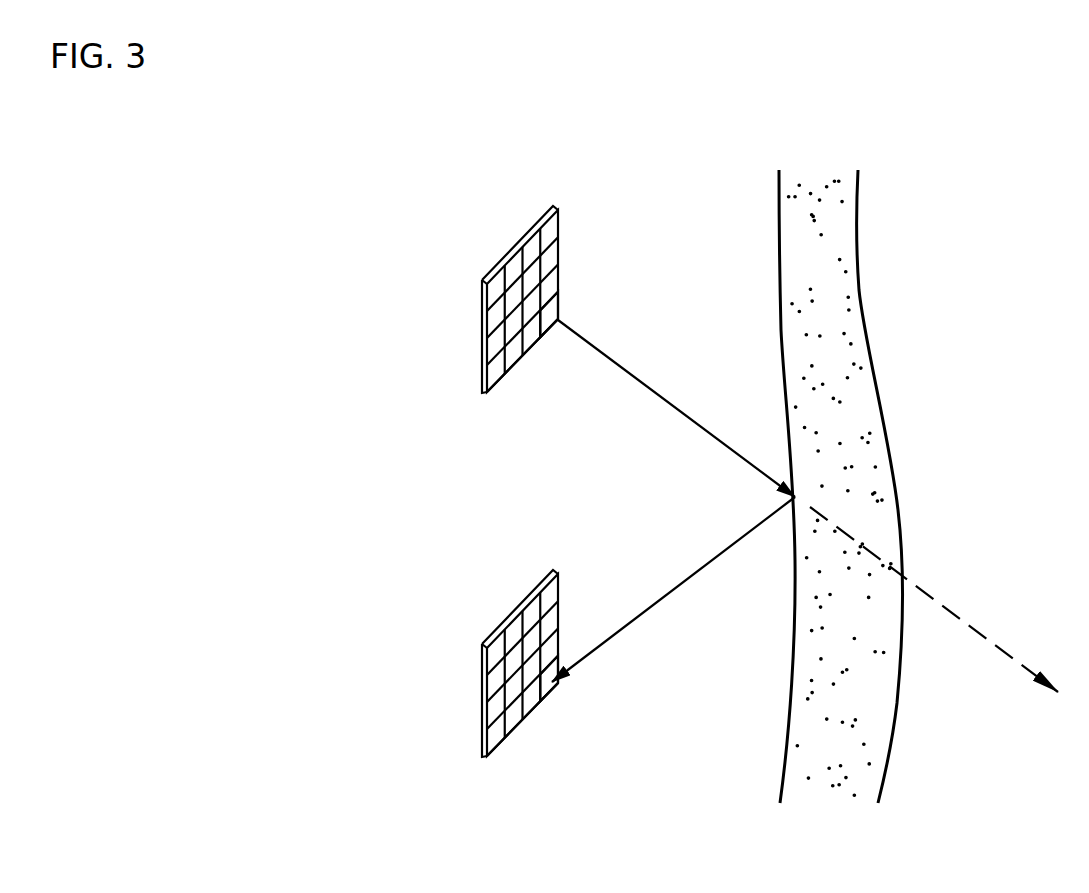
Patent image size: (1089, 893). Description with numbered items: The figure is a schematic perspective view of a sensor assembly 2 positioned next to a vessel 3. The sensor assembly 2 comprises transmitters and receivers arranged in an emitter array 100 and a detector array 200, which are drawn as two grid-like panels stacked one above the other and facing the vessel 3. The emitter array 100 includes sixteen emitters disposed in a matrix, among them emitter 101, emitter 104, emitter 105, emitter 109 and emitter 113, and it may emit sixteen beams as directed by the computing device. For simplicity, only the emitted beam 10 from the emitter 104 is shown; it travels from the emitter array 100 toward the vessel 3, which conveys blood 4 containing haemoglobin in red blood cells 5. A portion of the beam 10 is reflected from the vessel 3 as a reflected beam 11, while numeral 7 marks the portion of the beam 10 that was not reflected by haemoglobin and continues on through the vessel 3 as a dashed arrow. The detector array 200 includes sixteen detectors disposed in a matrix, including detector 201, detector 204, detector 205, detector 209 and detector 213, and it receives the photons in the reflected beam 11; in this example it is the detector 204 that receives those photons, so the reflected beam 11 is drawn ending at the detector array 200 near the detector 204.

The sensor assembly 2 is at (478, 412).
The vessel 3 is at (865, 486).
The blood 4 is at (840, 267).
The red blood cells 5 is at (837, 330).
The non-reflected portion of beam 7 is at (940, 603).
The emitted beam 10 is at (625, 368).
The reflected beam 11 is at (648, 610).
The emitter array 100 is at (515, 259).
The emitter 101 is at (492, 372).
The emitter 104 is at (546, 313).
The emitter 105 is at (492, 343).
The emitter 109 is at (492, 317).
The emitter 113 is at (492, 288).
The detector array 200 is at (502, 701).
The detector 201 is at (480, 719).
The detector 204 is at (570, 705).
The detector 205 is at (480, 692).
The detector 209 is at (480, 666).
The detector 213 is at (480, 638).